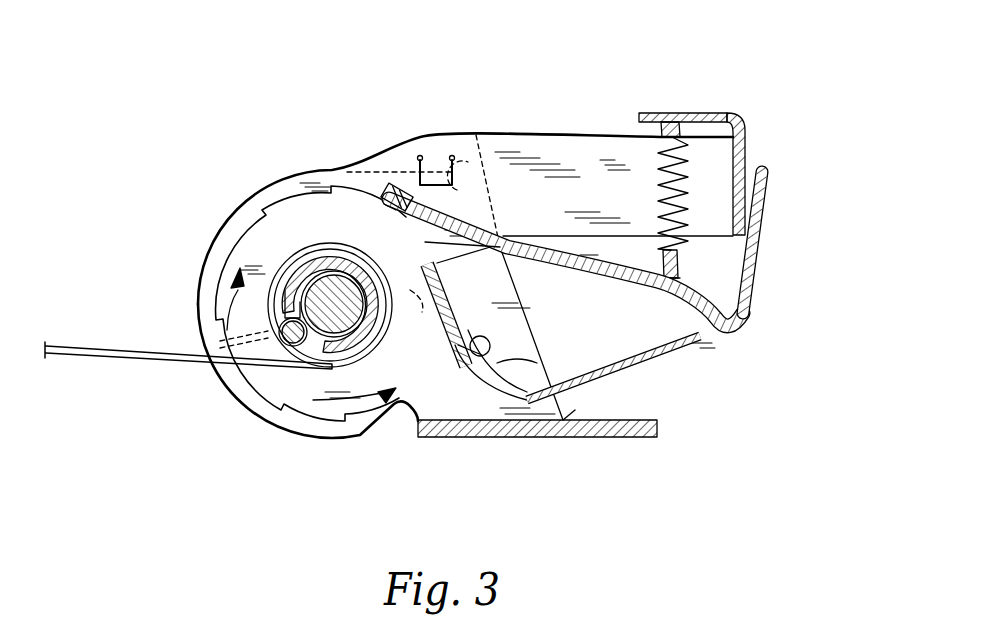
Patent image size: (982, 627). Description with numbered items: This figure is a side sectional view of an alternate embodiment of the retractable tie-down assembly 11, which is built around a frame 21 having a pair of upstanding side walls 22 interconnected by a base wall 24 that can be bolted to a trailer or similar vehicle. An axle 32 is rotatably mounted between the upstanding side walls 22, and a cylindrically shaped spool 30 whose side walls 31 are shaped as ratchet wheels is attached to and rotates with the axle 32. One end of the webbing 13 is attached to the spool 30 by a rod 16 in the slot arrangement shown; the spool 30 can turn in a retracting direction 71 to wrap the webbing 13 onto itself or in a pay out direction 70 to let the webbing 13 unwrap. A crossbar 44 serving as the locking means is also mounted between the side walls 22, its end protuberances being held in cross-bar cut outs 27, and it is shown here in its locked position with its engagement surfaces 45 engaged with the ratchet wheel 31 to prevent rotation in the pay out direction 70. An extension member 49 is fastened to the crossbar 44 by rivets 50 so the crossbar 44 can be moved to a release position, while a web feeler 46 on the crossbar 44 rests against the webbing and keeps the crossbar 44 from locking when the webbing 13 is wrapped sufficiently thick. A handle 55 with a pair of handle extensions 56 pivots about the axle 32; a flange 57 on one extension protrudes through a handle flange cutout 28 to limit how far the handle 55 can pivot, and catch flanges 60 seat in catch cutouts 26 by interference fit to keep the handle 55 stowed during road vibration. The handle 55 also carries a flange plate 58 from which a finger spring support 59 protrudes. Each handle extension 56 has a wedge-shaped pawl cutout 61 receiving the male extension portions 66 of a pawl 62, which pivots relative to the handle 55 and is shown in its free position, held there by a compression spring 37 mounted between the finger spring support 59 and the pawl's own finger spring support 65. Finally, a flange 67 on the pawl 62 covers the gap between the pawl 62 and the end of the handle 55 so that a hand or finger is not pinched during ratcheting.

The retractable tie-down assembly 11 is at (180, 138).
The webbing 13 is at (74, 358).
The rod 16 is at (272, 292).
The frame 21 is at (577, 410).
The upstanding side walls 22 is at (513, 365).
The base wall 24 is at (612, 440).
The catch cutouts 26 is at (466, 183).
The cross-bar cut outs 27 is at (458, 368).
The handle flange cutout 28 is at (290, 358).
The spool 30 is at (282, 300).
The side walls (ratchet wheels) 31 is at (218, 272).
The axle 32 is at (336, 287).
The compression spring 37 is at (680, 265).
The crossbar 44 is at (477, 372).
The engagement surfaces 45 is at (443, 280).
The web feeler 46 is at (447, 272).
The extension member 49 is at (700, 346).
The rivets 50 is at (492, 342).
The handle 55 is at (747, 184).
The handle extensions 56 is at (352, 170).
The flange 57 is at (283, 342).
The flange plate 58 is at (680, 113).
The finger spring support 59 is at (660, 130).
The catch flanges 60 is at (437, 166).
The pawl cutout 61 is at (401, 193).
The pawl 62 is at (740, 326).
The finger spring support 65 is at (673, 275).
The male extension portions 66 is at (408, 192).
The flange 67 is at (770, 213).
The pay out direction 70 is at (228, 305).
The retracting direction 71 is at (363, 420).